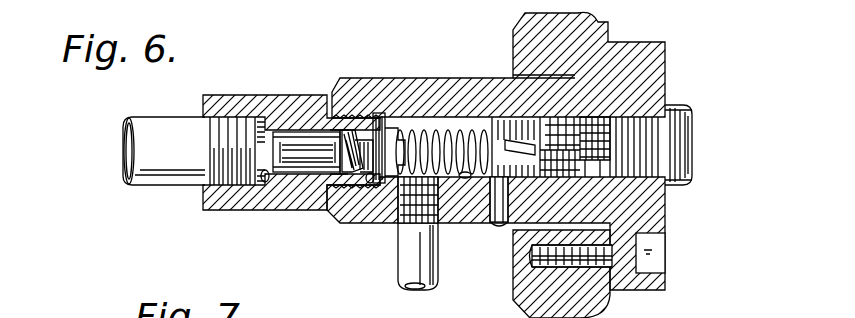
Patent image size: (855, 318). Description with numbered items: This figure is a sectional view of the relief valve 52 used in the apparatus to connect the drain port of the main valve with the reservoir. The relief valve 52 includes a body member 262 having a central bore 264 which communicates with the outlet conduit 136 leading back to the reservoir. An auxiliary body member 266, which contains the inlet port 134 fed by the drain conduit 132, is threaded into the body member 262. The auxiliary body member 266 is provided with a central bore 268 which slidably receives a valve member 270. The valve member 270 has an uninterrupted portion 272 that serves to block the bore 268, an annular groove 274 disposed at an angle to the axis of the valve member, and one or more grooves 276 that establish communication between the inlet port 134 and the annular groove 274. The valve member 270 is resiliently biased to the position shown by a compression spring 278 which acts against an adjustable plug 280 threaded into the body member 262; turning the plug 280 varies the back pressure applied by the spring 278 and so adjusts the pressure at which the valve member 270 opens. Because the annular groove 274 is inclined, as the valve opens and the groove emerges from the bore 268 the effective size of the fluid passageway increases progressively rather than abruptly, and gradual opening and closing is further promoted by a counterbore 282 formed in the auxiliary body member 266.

The relief valve 52 is at (480, 72).
The conduit 132 is at (156, 127).
The inlet port 134 is at (268, 182).
The conduit 136 is at (427, 260).
The body member 262 is at (353, 92).
The central bore 264 is at (466, 177).
The auxiliary body member 266 is at (273, 97).
The central bore 268 is at (308, 176).
The valve member 270 is at (316, 128).
The uninterrupted portion 272 is at (360, 140).
The annular groove 274 is at (348, 168).
The grooves 276 is at (292, 160).
The compression spring 278 is at (440, 132).
The adjustable plug 280 is at (588, 104).
The counterbore 282 is at (372, 183).